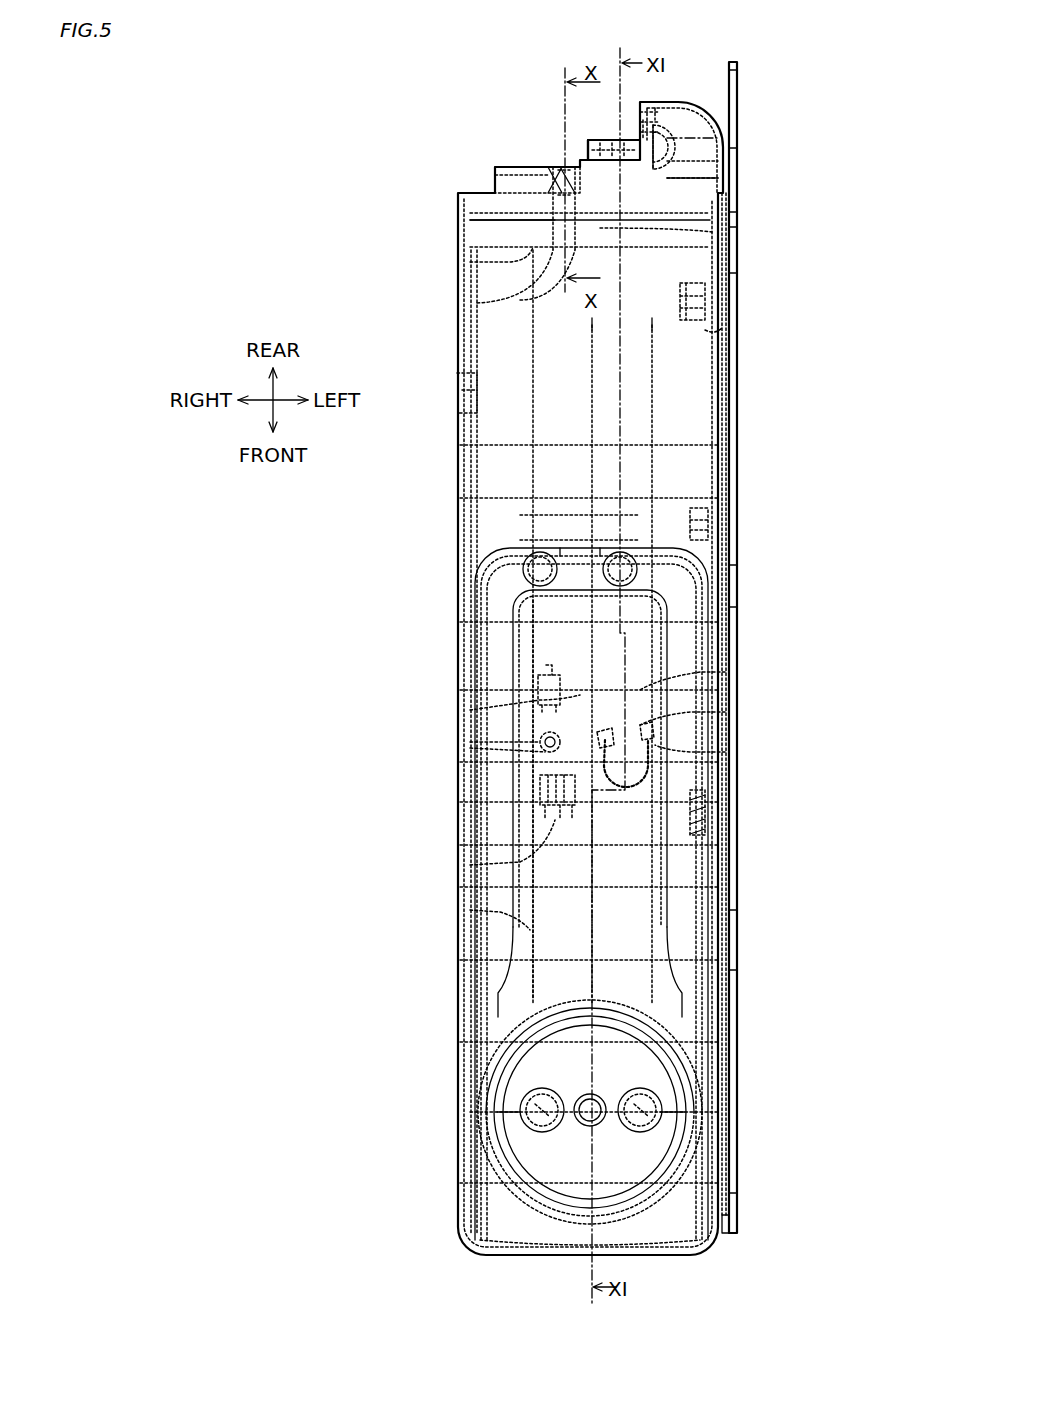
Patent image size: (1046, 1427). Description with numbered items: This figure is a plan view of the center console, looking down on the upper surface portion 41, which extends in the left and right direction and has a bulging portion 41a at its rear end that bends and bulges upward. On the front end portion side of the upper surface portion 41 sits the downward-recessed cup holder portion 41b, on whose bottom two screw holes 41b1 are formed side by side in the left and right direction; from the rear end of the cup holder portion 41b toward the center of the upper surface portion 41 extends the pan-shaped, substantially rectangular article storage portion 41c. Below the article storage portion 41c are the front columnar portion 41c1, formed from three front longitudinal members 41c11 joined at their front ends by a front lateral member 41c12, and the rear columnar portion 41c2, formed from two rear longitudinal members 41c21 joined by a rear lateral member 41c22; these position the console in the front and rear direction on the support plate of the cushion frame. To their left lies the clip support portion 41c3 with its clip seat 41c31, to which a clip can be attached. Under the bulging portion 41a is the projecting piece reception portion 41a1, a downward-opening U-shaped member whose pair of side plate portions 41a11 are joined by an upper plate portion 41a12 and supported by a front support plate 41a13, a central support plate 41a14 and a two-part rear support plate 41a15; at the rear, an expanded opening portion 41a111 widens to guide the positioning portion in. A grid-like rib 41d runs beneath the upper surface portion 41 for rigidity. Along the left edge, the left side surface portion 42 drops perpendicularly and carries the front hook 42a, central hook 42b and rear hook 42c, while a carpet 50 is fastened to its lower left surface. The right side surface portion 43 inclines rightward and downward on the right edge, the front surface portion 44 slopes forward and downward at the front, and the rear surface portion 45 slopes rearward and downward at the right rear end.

The upper surface portion 41 is at (605, 678).
The bulging portion 41a is at (725, 268).
The projecting piece reception portion 41a1 is at (550, 230).
The side plate portions 41a11 is at (553, 205).
The expanded opening portion 41a111 is at (580, 165).
The upper plate portion 41a12 is at (477, 303).
The front support plate 41a13 is at (470, 265).
The central support plate 41a14 is at (725, 232).
The rear support plate 41a15 is at (525, 168).
The cup holder portion 41b is at (562, 1067).
The screw holes 41b1 is at (520, 1107).
The article storage portion 41c is at (500, 650).
The front columnar portion 41c1 is at (470, 797).
The front longitudinal members 41c11 is at (470, 748).
The front lateral member 41c12 is at (470, 865).
The rear columnar portion 41c2 is at (470, 670).
The rear longitudinal members 41c21 is at (470, 710).
The rear lateral member 41c22 is at (547, 668).
The clip support portion 41c3 is at (725, 752).
The clip seat 41c31 is at (725, 712).
The grid-like rib 41d is at (470, 910).
The left side surface portion 42 is at (726, 606).
The front hook 42a is at (725, 850).
The central hook 42b is at (725, 566).
The rear hook 42c is at (725, 333).
The right side surface portion 43 is at (462, 580).
The front surface portion 44 is at (532, 1262).
The rear surface portion 45 is at (690, 108).
The carpet 50 is at (738, 376).